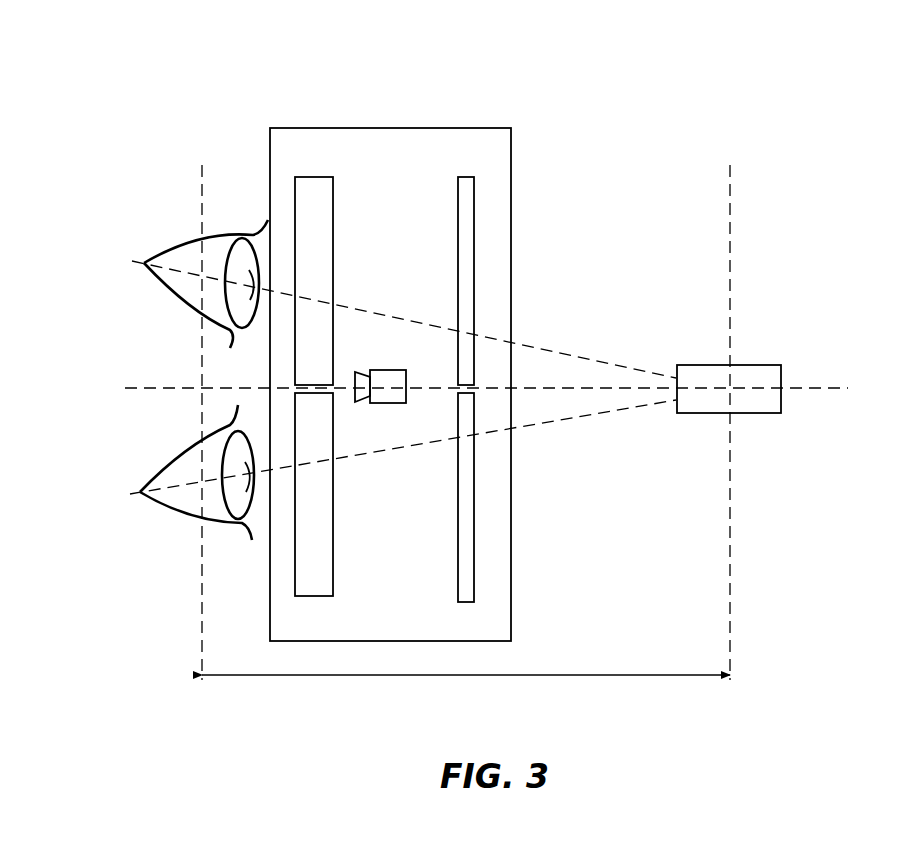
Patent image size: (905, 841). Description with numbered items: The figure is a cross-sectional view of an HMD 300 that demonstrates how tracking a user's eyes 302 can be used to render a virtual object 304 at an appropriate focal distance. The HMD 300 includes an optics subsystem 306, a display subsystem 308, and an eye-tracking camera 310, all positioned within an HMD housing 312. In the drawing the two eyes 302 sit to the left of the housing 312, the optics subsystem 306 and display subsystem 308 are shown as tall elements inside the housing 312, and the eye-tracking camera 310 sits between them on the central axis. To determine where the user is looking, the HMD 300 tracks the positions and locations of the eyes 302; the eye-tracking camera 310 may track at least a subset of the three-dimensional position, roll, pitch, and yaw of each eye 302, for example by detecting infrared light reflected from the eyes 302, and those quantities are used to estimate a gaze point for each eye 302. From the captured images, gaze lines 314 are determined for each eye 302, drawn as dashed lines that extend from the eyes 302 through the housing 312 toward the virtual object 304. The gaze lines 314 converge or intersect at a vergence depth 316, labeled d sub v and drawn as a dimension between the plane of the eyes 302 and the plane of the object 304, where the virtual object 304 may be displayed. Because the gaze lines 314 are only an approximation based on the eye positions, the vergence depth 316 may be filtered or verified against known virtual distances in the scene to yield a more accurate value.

The HMD 300 is at (124, 92).
The user's eyes 302 is at (182, 245).
The virtual object 304 is at (760, 365).
The optics subsystem 306 is at (313, 177).
The display subsystem 308 is at (468, 177).
The eye-tracking camera 310 is at (393, 370).
The HMD housing 312 is at (512, 188).
The gaze lines 314 is at (593, 413).
The vergence depth 316 is at (488, 675).